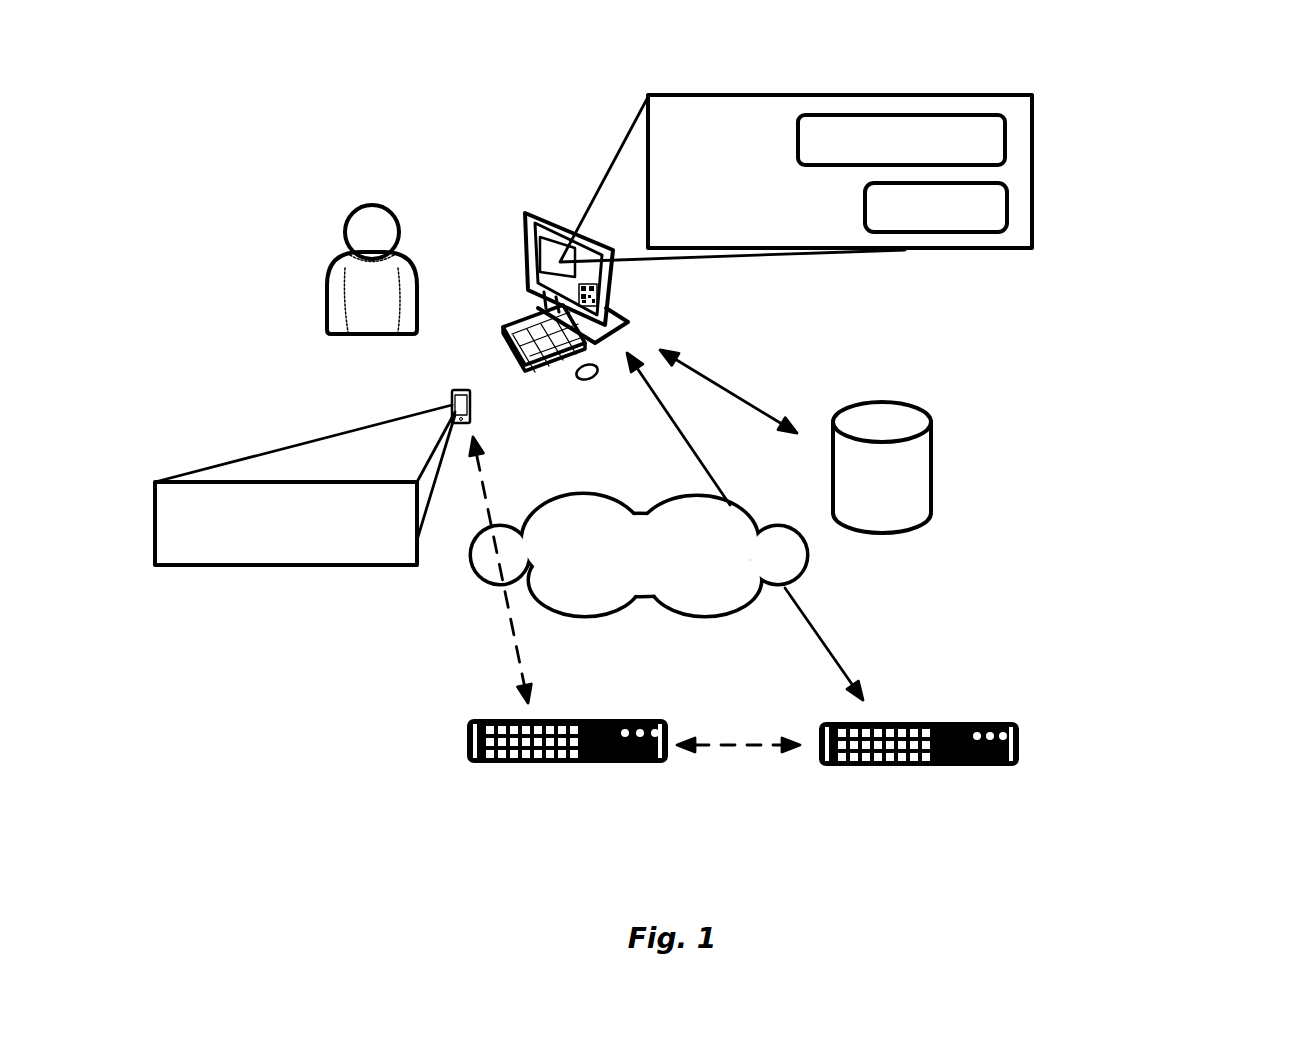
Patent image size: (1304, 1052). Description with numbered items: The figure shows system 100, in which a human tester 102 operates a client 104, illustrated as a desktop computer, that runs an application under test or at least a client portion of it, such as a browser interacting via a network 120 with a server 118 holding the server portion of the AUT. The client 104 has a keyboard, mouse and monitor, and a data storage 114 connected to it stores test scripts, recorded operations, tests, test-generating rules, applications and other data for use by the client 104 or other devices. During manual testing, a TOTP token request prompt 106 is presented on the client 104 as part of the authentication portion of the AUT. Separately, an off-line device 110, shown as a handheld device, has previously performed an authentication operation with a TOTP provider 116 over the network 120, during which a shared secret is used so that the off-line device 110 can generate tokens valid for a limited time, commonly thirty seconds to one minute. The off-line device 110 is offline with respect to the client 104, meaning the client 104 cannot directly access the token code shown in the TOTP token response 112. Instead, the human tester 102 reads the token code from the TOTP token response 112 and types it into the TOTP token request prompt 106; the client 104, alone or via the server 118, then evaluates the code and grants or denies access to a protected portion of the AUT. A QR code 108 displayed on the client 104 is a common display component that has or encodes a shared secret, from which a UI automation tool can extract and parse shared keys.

The system 100 is at (1216, 72).
The human tester 102 is at (330, 268).
The client 104 is at (525, 228).
The TOTP token request prompt 106 is at (985, 97).
The QR code 108 is at (598, 294).
The off-line device 110 is at (452, 405).
The TOTP token response 112 is at (230, 565).
The data storage 114 is at (920, 407).
The TOTP provider 116 is at (615, 720).
The server 118 is at (977, 723).
The network 120 is at (805, 555).